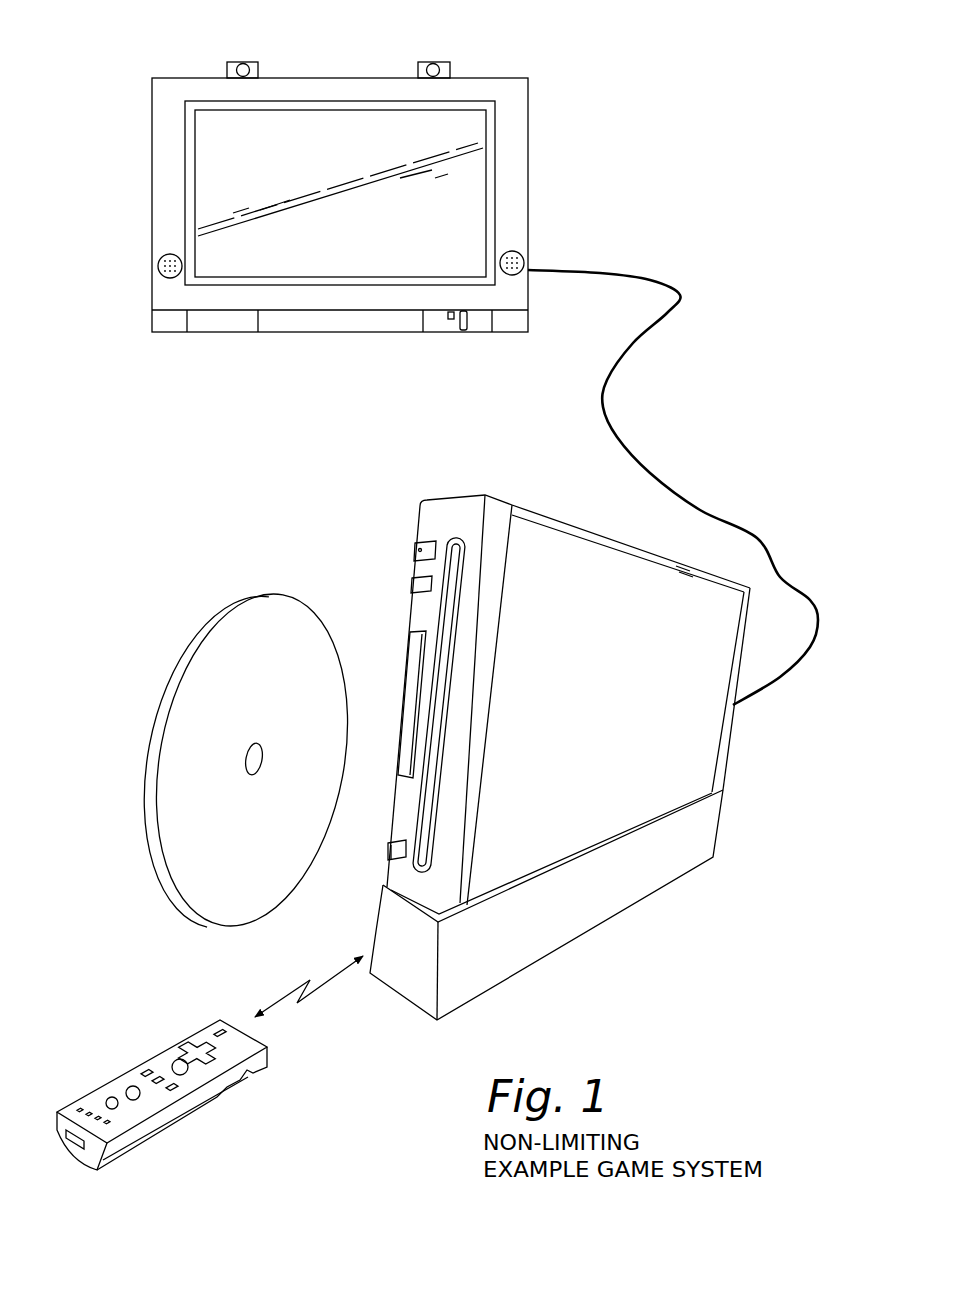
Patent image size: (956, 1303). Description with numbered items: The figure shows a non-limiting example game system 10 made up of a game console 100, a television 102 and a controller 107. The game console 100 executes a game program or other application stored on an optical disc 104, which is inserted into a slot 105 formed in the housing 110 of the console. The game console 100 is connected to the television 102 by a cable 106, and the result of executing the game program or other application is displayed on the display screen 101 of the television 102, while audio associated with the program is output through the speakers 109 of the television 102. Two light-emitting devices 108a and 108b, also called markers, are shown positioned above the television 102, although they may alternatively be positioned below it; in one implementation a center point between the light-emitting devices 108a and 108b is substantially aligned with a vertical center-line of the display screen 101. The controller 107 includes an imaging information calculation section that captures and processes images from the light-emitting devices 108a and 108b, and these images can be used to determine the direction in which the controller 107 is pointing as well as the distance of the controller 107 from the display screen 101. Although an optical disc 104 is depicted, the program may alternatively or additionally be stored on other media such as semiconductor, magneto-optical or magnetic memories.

The game system 10 is at (437, 595).
The game console 100 is at (579, 721).
The display screen 101 is at (227, 155).
The television 102 is at (371, 176).
The optical disc 104 is at (152, 862).
The slot 105 is at (350, 738).
The cable 106 is at (652, 473).
The controller 107 is at (284, 1055).
The light-emitting device 108a is at (262, 66).
The light-emitting device 108b is at (442, 66).
The speakers 109 is at (160, 276).
The housing 110 is at (577, 527).